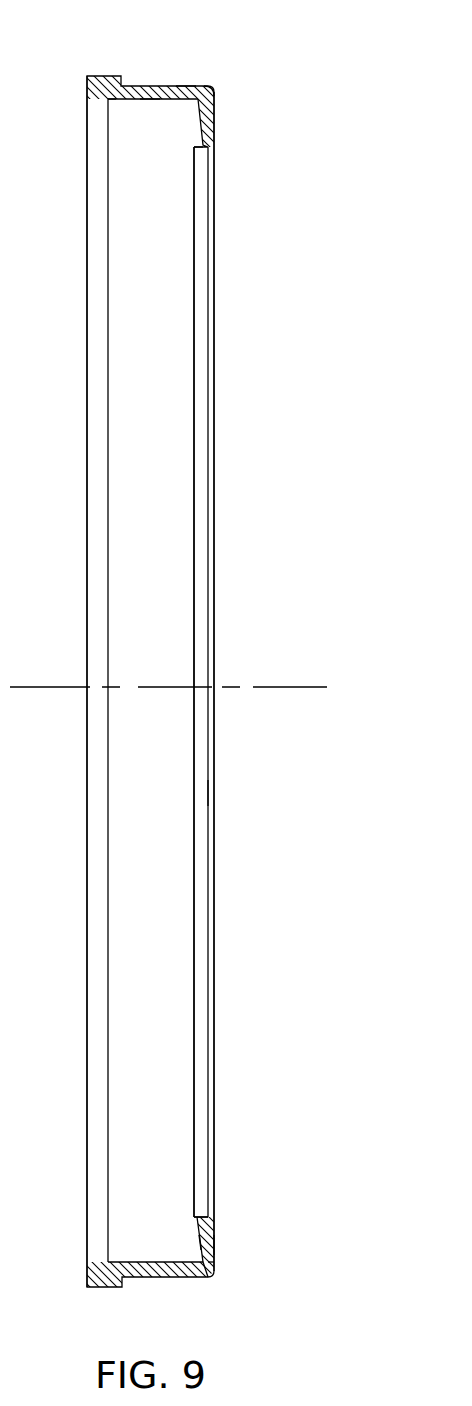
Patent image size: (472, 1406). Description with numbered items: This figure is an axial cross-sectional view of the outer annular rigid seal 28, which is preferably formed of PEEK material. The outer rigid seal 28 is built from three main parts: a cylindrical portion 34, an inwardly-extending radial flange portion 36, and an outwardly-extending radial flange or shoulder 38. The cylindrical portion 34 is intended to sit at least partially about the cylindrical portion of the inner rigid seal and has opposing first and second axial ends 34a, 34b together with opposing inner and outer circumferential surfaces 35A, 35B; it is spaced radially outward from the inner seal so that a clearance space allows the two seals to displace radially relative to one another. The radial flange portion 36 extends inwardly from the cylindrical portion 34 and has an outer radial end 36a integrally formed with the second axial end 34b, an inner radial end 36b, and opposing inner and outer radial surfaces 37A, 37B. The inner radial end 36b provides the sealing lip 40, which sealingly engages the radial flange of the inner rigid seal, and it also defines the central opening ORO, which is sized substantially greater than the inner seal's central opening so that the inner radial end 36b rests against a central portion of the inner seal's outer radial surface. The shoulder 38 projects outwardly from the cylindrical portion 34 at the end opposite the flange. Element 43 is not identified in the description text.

The outer annular rigid seal 28 is at (268, 67).
The cylindrical portion 34 is at (165, 85).
The first axial end 34a is at (112, 97).
The second axial end 34b is at (215, 91).
The inner circumferential surface 35A is at (148, 101).
The outer circumferential surface 35B is at (185, 86).
The inwardly-extending radial flange portion 36 is at (218, 115).
The outer radial end 36a is at (210, 1258).
The inner radial end 36b is at (203, 1213).
The inner radial surface 37A is at (202, 1242).
The outer radial surface 37B is at (217, 1245).
The outwardly-extending radial flange or shoulder 38 is at (101, 74).
The sealing lip 40 is at (193, 230).
The notch 43 is at (197, 143).
The central opening ORO is at (208, 792).